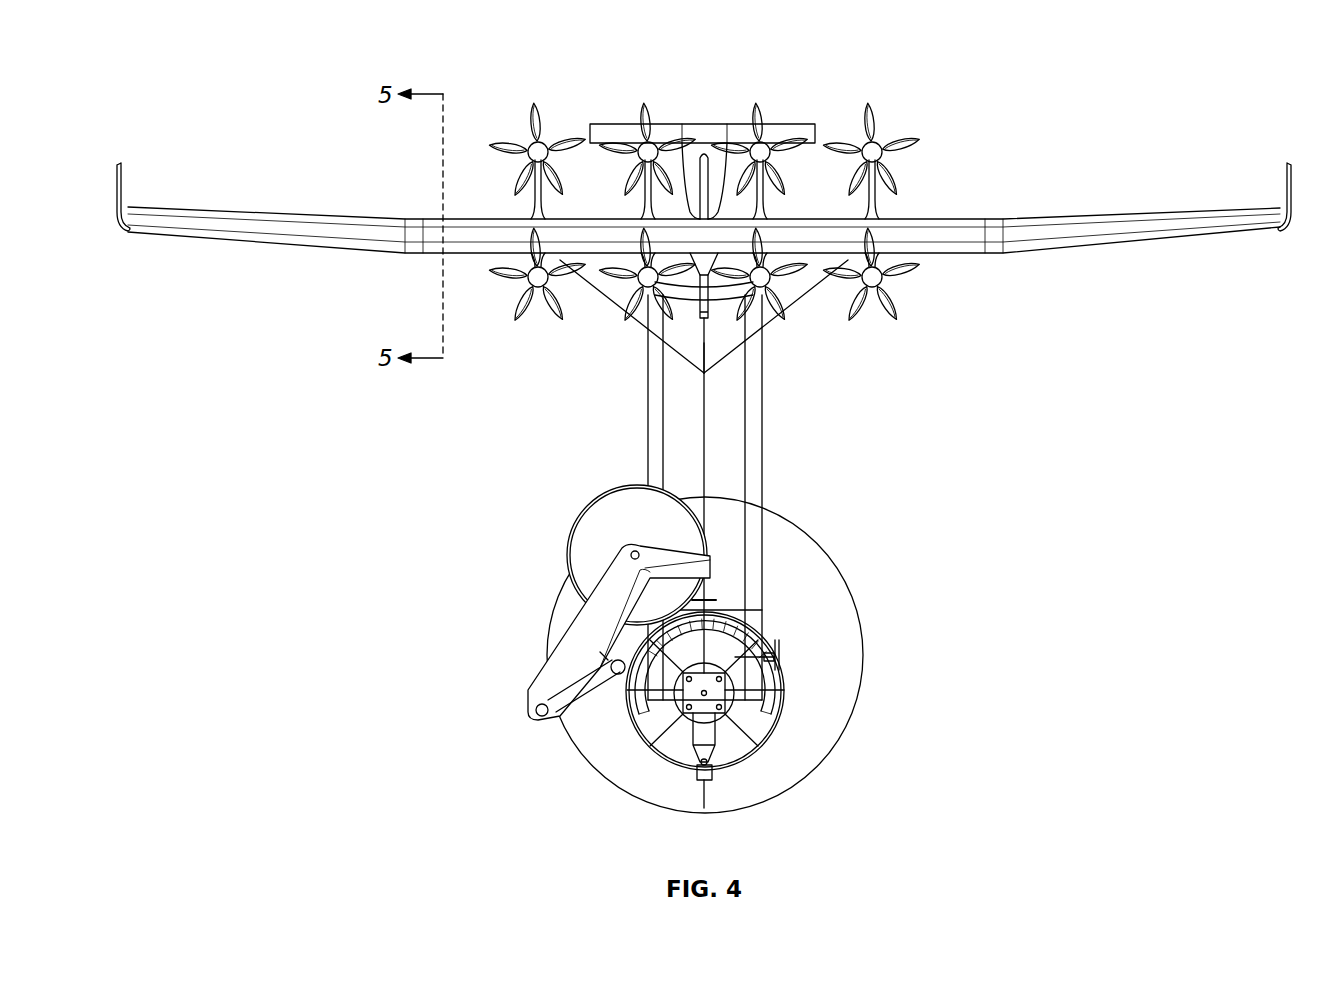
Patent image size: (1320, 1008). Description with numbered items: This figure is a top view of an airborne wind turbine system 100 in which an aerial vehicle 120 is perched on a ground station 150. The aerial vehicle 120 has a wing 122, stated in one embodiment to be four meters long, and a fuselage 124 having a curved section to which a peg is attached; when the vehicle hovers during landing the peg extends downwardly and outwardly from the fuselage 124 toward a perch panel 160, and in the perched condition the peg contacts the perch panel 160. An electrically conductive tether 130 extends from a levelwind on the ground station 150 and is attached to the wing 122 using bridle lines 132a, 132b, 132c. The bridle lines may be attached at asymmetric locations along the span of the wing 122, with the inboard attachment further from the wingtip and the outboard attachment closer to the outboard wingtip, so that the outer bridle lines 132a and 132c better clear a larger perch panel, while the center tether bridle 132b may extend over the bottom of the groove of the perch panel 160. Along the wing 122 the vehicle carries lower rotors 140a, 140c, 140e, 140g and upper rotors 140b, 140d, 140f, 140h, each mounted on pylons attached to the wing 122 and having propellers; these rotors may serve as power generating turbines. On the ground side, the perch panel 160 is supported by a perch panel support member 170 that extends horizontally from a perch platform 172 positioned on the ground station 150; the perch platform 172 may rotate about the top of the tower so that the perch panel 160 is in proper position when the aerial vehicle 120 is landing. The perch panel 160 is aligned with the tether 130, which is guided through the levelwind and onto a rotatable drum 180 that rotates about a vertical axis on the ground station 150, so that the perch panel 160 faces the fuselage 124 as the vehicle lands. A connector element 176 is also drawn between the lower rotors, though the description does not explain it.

The airborne wind turbine system 100 is at (1130, 424).
The aerial vehicle 120 is at (988, 138).
The wing 122 is at (950, 237).
The fuselage 124 is at (701, 150).
The electrically conductive tether 130 is at (706, 440).
The bridle line 132a is at (604, 300).
The bridle line 132b is at (706, 343).
The bridle line 132c is at (810, 297).
The lower rotor 140a is at (537, 300).
The upper rotor 140b is at (545, 145).
The lower rotor 140c is at (650, 295).
The upper rotor 140d is at (650, 140).
The lower rotor 140e is at (800, 298).
The upper rotor 140f is at (762, 140).
The lower rotor 140g is at (890, 285).
The upper rotor 140h is at (878, 145).
The ground station 150 is at (1020, 730).
The perch panel 160 is at (580, 500).
The perch panel support member 170 is at (764, 412).
The perch platform 172 is at (652, 408).
The peg 176 is at (726, 297).
The rotatable drum 180 is at (777, 732).